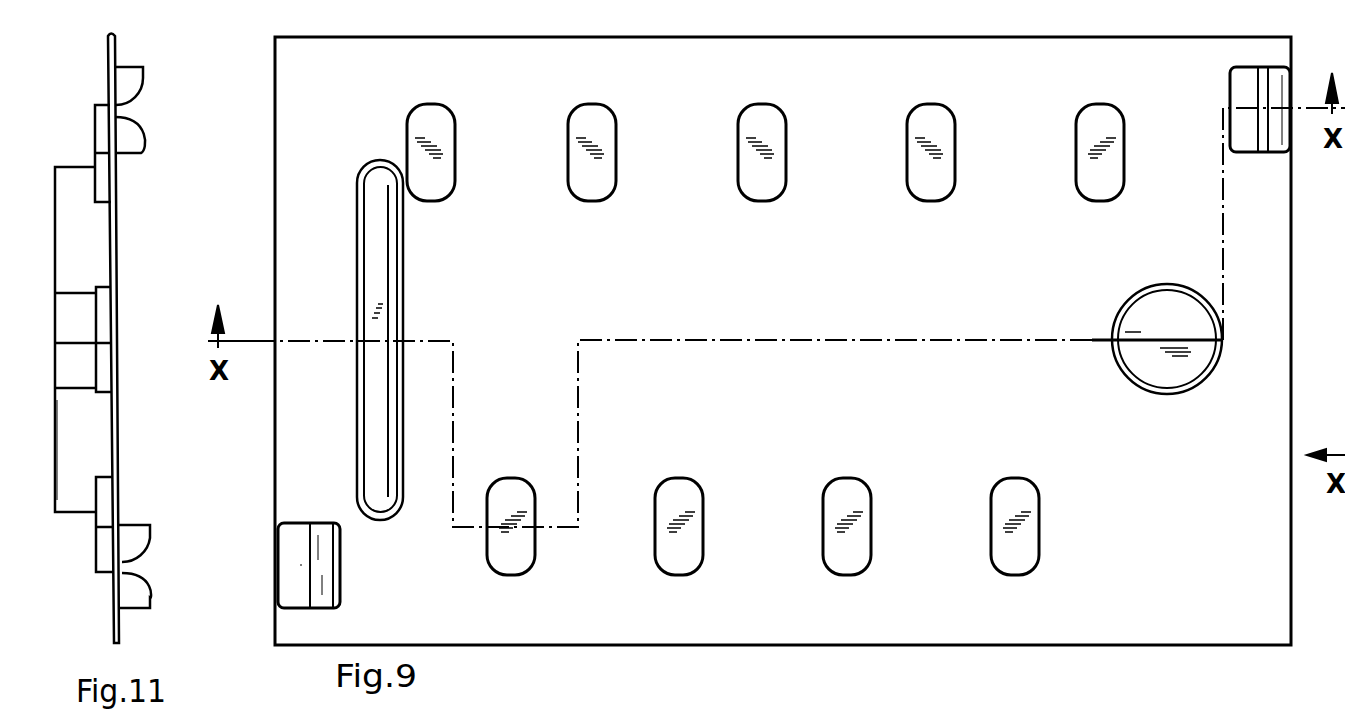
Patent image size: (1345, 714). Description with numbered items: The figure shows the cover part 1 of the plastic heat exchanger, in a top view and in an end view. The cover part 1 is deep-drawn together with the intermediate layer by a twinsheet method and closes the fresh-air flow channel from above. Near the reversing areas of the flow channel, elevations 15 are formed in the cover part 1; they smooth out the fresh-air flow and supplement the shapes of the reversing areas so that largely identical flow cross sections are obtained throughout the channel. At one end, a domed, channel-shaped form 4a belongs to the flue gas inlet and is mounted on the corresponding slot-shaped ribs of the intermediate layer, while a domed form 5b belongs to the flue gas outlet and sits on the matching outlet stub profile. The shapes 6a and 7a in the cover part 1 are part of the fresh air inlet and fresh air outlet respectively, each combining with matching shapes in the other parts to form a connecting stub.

In FIG. 9, the cover part 1 is at (517, 78).
In FIG. 11, the cover part 1 is at (74, 555).
In FIG. 9, the elevations 15 is at (572, 170).
In FIG. 9, the domed rib / channel-shaped form of flue gas inlet 4a is at (385, 500).
In FIG. 11, the domed rib / channel-shaped form of flue gas inlet 4a is at (72, 477).
In FIG. 9, the shape of fresh air outlet 7a is at (299, 593).
In FIG. 11, the shape of fresh air outlet 7a is at (143, 610).
In FIG. 9, the shape of fresh air inlet 6a is at (1243, 90).
In FIG. 11, the shape of fresh air inlet 6a is at (139, 144).
In FIG. 9, the domed form of flue gas outlet 5b is at (1188, 370).
In FIG. 11, the domed form of flue gas outlet 5b is at (78, 372).